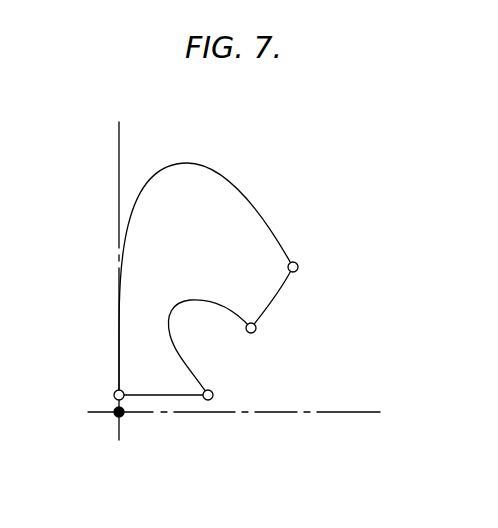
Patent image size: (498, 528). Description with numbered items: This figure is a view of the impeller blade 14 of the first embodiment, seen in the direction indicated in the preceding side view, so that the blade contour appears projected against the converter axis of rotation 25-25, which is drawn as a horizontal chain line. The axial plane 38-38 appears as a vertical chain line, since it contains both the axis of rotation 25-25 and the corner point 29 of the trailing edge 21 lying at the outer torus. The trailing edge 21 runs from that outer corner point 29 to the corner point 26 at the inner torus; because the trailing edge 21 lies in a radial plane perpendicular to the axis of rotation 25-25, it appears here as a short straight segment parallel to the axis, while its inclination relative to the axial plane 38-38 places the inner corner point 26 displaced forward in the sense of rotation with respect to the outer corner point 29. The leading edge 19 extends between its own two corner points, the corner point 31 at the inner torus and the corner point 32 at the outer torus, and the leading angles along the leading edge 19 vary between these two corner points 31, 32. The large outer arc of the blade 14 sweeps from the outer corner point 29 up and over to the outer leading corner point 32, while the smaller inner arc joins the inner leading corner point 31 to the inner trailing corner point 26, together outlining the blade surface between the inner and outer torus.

The blade 14 is at (263, 213).
The leading edge 19 is at (283, 297).
The trailing edge 21 is at (165, 393).
The axis of rotation 25-25 is at (124, 417).
The corner point 26 is at (215, 394).
The corner point 29 is at (113, 395).
The corner point 31 is at (259, 332).
The corner point 32 is at (303, 262).
The axial plane 38 is at (118, 163).